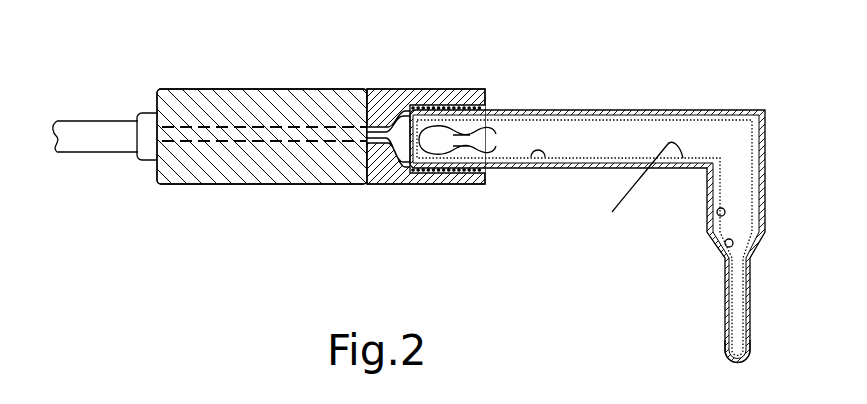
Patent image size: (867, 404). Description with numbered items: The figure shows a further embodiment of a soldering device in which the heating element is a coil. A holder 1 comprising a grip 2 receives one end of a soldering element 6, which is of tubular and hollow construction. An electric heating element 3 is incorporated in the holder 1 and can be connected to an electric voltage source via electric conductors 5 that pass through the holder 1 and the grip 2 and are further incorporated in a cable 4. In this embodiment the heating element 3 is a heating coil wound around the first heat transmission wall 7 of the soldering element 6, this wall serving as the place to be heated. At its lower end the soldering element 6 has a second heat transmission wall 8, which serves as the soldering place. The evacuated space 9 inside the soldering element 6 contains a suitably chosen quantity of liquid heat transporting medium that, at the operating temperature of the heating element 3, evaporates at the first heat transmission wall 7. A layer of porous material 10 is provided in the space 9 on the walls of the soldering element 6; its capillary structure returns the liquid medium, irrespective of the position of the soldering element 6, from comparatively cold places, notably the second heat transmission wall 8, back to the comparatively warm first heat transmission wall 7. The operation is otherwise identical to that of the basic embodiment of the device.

The holder 1 is at (387, 172).
The grip 2 is at (262, 163).
The electric heating element 3 is at (480, 173).
The cable 4 is at (100, 137).
The electric conductors 5 is at (248, 140).
The soldering element 6 is at (580, 110).
The first heat transmission wall 7 is at (482, 141).
The second heat transmission wall 8 is at (735, 362).
The evacuated space 9 is at (642, 151).
The layer of porous material 10 is at (547, 118).